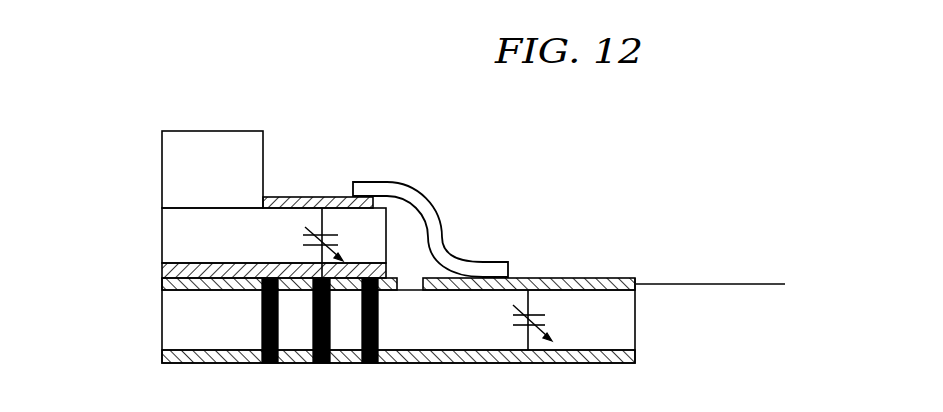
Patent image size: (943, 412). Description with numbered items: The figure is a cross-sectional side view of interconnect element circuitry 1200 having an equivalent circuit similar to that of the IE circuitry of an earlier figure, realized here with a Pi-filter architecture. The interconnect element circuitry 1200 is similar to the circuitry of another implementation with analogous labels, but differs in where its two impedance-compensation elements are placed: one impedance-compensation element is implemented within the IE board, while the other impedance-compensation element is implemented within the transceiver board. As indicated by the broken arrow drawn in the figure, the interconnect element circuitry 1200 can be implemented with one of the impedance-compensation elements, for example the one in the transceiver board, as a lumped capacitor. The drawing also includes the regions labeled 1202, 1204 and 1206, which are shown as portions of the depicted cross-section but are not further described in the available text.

The interconnect element circuitry 1200 is at (590, 104).
The substrate 1202 is at (643, 278).
The antenna structure 1204 is at (376, 187).
The antenna element 1206 is at (206, 131).